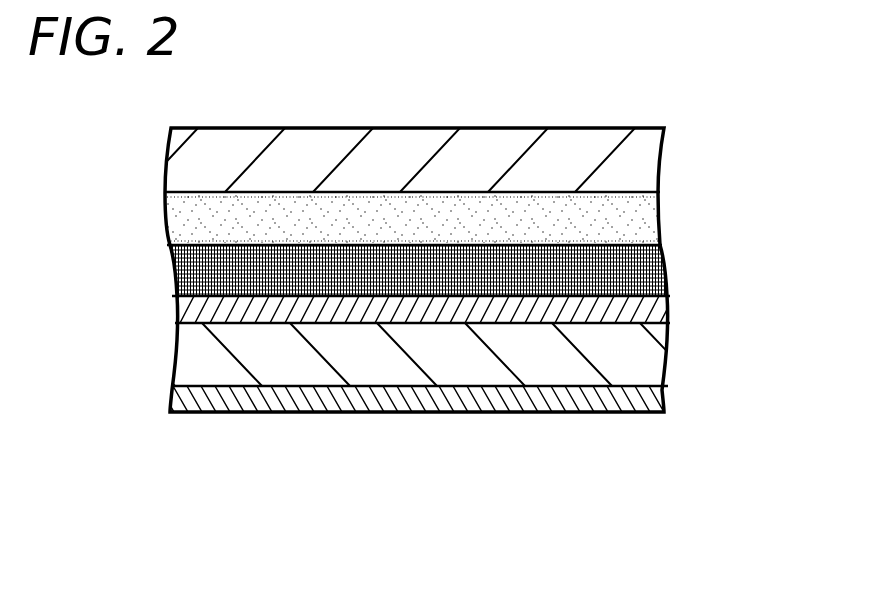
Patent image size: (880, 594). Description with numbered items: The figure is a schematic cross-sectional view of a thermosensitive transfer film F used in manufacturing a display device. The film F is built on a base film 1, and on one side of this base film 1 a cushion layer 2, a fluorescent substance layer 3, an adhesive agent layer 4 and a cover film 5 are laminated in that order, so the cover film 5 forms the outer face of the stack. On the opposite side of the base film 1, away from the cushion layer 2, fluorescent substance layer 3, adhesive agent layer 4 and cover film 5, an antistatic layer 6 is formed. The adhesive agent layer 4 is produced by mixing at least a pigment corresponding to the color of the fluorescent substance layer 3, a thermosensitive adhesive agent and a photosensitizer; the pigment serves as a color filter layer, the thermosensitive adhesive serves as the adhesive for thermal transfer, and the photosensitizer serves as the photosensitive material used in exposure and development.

The thermosensitive transfer film F is at (618, 88).
The base film 1 is at (637, 348).
The cushion layer 2 is at (637, 312).
The fluorescent substance layer 3 is at (637, 272).
The adhesive agent layer 4 is at (638, 218).
The cover film 5 is at (638, 162).
The antistatic layer 6 is at (637, 398).